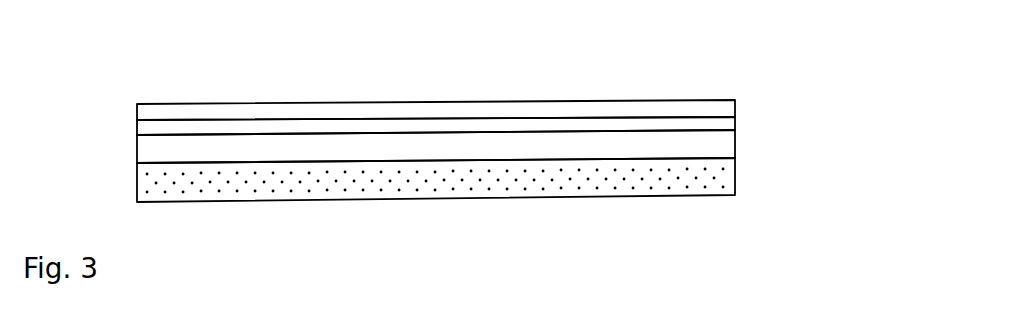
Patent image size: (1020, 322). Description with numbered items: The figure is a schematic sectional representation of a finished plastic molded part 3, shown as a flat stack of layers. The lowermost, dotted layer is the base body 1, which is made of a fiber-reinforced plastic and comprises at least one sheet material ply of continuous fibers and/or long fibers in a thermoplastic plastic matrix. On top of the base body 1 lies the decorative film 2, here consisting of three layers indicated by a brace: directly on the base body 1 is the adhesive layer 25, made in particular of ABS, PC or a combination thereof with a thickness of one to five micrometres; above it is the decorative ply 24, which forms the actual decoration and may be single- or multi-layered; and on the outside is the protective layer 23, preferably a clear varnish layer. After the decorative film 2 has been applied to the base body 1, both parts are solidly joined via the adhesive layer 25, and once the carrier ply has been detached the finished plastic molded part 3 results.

The base body 1 is at (735, 192).
The decorative film 2 is at (800, 88).
The plastic molded part 3 is at (769, 74).
The protective layer 23 is at (735, 101).
The decorative ply 24 is at (735, 118).
The adhesive layer 25 is at (728, 144).